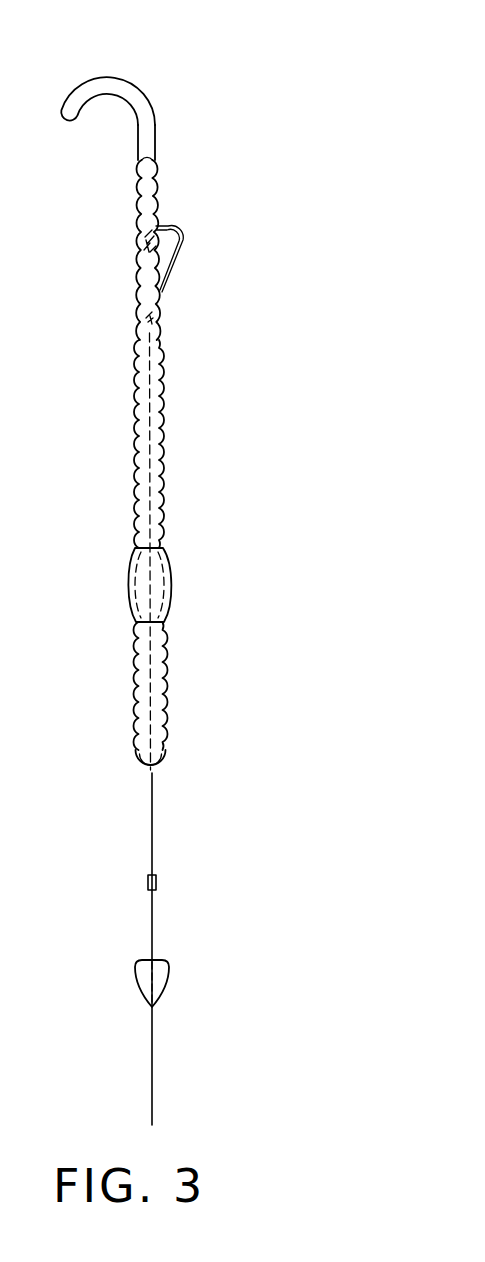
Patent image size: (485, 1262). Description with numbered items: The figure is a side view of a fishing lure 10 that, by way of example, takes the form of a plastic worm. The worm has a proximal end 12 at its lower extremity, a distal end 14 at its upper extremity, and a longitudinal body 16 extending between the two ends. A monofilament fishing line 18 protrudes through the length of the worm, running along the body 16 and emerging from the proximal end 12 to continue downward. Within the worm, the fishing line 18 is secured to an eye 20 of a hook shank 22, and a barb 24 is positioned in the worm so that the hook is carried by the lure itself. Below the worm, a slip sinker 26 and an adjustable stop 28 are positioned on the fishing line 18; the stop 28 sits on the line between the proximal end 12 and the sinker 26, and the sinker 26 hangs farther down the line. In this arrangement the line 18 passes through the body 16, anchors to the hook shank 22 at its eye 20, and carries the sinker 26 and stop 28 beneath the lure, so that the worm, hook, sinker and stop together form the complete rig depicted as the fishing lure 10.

The fishing lure 10 is at (262, 578).
The proximal end 12 is at (168, 757).
The distal end 14 is at (128, 78).
The longitudinal body 16 is at (156, 138).
The monofilament fishing line 18 is at (153, 823).
The eye 20 is at (161, 342).
The hook shank 22 is at (177, 266).
The barb 24 is at (140, 232).
The slip sinker 26 is at (166, 978).
The adjustable stop 28 is at (157, 884).